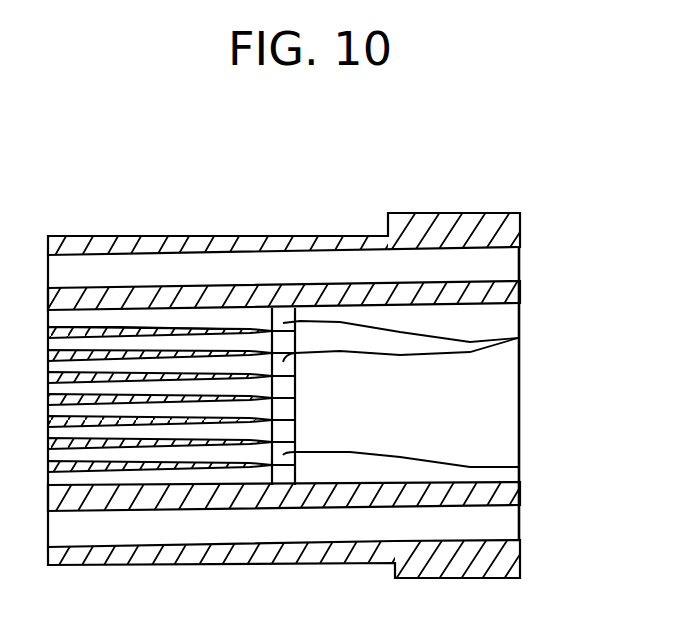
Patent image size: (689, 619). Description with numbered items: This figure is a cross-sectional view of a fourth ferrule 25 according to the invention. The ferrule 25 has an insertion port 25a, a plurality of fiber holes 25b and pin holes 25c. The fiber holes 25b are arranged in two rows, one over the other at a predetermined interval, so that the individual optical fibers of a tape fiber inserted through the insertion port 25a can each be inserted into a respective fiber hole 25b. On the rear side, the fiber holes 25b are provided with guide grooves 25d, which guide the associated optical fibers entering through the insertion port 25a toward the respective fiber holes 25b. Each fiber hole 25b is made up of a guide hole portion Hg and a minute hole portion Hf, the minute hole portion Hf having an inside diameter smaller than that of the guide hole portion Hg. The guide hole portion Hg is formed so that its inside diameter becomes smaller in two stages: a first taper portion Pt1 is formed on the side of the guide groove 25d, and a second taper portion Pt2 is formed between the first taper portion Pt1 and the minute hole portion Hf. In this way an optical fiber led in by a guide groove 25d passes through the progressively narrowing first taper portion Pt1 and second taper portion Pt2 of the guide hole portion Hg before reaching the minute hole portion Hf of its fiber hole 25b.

The ferrule 25 is at (352, 233).
The insertion port 25a is at (487, 400).
The fiber holes 25b is at (258, 185).
The pin holes 25c is at (490, 282).
The guide grooves 25d is at (518, 338).
The minute hole portion Hf is at (91, 327).
The second taper portion Pt2 is at (143, 325).
The guide hole portion Hg is at (195, 322).
The first taper portion Pt1 is at (240, 318).